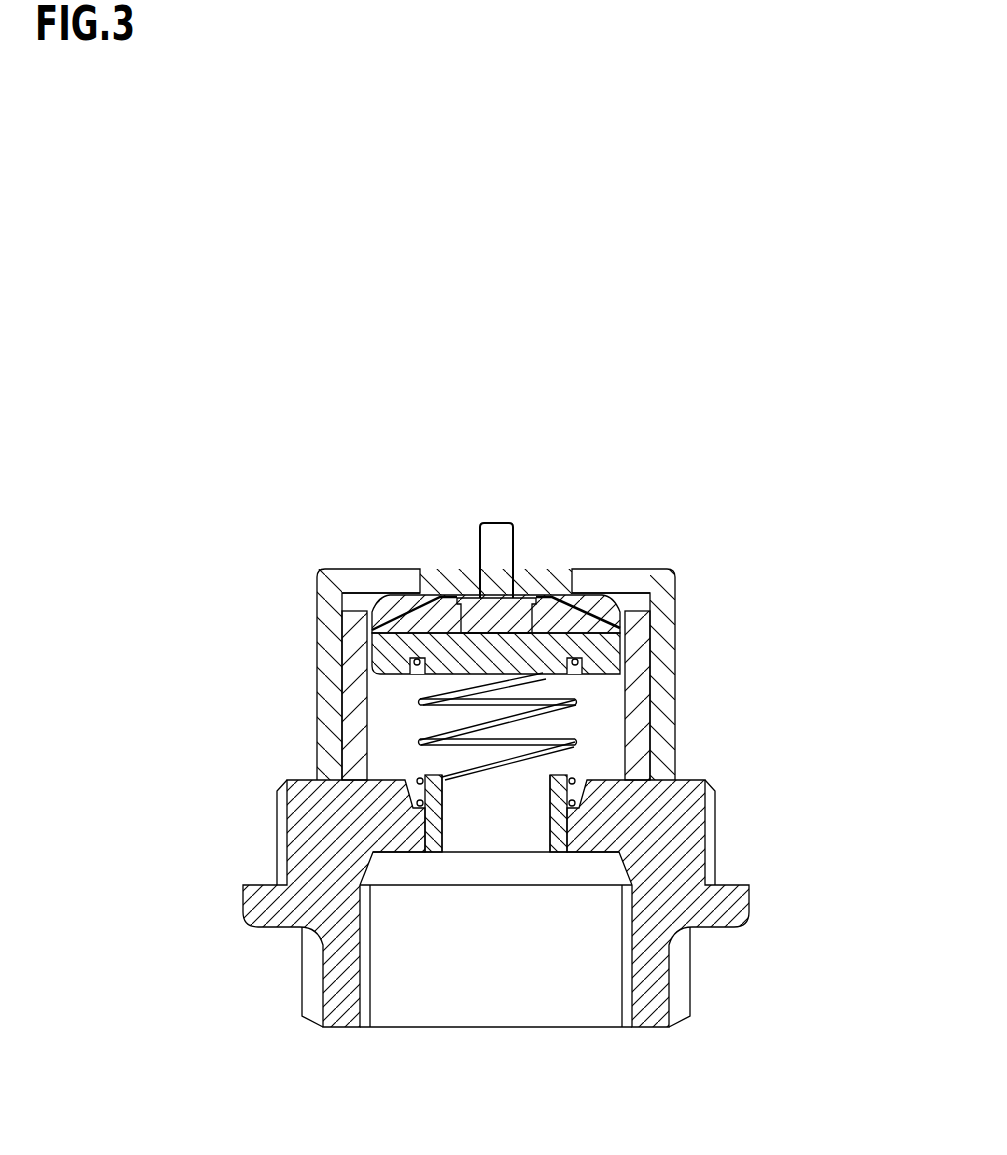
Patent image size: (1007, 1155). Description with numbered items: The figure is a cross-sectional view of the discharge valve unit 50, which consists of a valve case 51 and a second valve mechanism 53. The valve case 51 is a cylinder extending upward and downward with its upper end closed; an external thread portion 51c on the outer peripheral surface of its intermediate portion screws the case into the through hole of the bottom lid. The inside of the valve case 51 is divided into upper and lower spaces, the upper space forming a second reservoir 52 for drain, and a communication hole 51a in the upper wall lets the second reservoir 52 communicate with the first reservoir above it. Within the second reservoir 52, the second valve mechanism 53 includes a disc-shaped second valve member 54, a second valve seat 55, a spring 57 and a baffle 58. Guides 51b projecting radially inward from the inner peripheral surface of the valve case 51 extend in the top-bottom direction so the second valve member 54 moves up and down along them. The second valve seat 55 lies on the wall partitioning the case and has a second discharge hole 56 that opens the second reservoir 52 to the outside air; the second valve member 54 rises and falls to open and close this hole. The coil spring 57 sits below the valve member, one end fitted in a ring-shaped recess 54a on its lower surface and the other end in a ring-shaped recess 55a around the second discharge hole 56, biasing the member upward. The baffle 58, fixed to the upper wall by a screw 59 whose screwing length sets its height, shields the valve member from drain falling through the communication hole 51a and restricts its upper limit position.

The discharge valve unit 50 is at (210, 404).
The valve case 51 is at (316, 704).
The communication hole 51a is at (353, 568).
The guides 51b is at (355, 628).
The external thread portion 51c is at (282, 828).
The second reservoir 52 is at (388, 725).
The second valve mechanism 53 is at (598, 717).
The second valve member 54 is at (605, 656).
The ring-shaped recess 54a is at (418, 676).
The second valve seat 55 is at (432, 838).
The ring-shaped recess 55a is at (583, 782).
The second discharge hole 56 is at (522, 812).
The spring 57 is at (578, 746).
The baffle 58 is at (588, 623).
The screw 59 is at (500, 523).